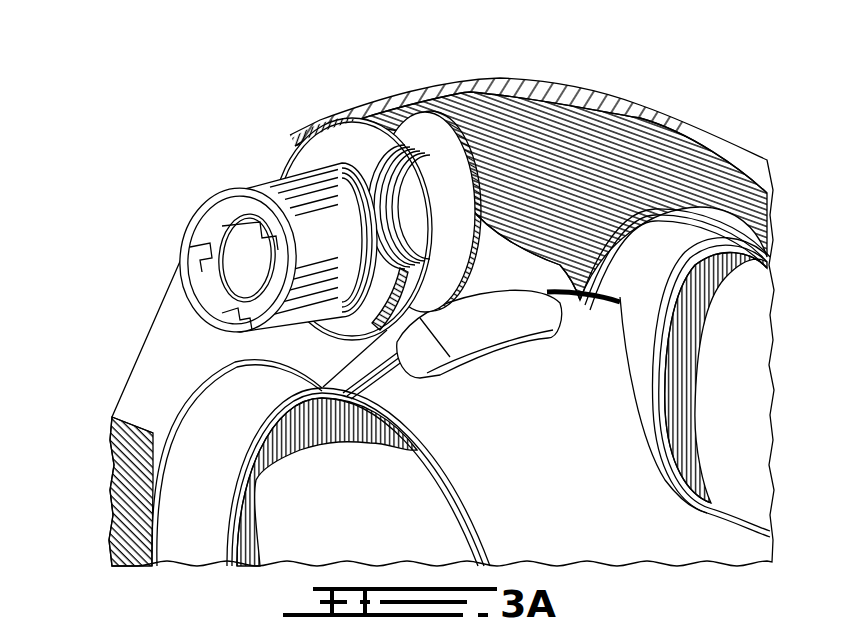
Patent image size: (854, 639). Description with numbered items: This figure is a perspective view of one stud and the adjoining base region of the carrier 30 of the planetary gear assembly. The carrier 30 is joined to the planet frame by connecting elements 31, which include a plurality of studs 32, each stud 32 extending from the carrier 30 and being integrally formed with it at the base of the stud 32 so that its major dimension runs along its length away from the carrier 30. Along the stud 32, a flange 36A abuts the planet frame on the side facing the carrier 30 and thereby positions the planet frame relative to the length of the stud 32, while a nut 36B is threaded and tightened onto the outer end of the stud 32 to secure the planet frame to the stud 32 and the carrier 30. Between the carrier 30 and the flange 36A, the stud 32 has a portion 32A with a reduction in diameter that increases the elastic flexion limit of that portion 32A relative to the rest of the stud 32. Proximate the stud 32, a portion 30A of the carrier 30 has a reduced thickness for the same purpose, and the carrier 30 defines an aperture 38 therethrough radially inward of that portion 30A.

The carrier 30 is at (561, 449).
The portion of the carrier 30A is at (419, 153).
The connecting elements 31 is at (238, 194).
The stud 32 is at (242, 194).
The portion of the stud 32A is at (407, 187).
The flange 36A is at (313, 125).
The nut 36B is at (218, 294).
The aperture 38 is at (490, 329).